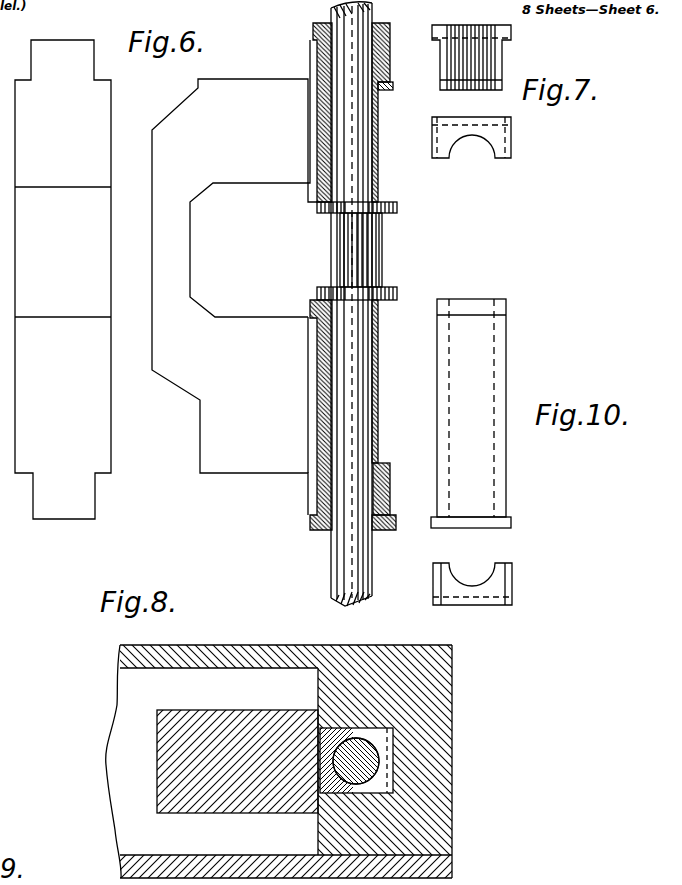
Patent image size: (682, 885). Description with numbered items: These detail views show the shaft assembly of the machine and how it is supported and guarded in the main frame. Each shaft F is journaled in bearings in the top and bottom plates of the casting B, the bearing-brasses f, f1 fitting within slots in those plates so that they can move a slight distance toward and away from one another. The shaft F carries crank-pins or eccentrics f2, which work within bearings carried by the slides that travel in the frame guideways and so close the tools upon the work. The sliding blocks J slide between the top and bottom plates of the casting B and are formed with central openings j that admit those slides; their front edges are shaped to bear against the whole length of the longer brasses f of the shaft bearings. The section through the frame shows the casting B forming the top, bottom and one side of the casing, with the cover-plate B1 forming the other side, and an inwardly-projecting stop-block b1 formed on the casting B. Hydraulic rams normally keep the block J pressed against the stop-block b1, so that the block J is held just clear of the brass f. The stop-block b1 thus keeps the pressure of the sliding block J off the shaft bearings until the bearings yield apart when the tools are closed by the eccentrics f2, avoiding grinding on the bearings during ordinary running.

In FIG. 6, the sliding block J is at (161, 279).
In FIG. 8, the sliding block J is at (163, 760).
In FIG. 6, the central opening j is at (249, 250).
In FIG. 6, the bearing-brass f is at (322, 38).
In FIG. 10, the bearing-brass f is at (503, 521).
In FIG. 8, the bearing-brass f is at (352, 738).
In FIG. 6, the bearing-brass f1 is at (391, 466).
In FIG. 7, the bearing-brass f1 is at (505, 136).
In FIG. 8, the bearing-brass f1 is at (368, 736).
In FIG. 6, the crank-pin f2 is at (336, 252).
In FIG. 6, the shaft F is at (351, 304).
In FIG. 8, the casting B is at (208, 660).
In FIG. 8, the cover-plate B1 is at (130, 868).
In FIG. 8, the stop-block b1 is at (438, 714).